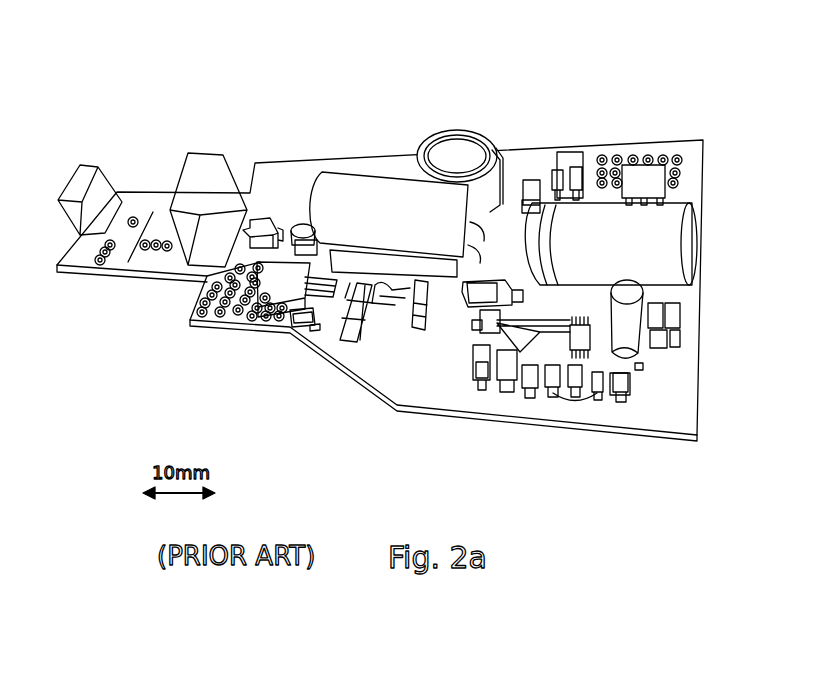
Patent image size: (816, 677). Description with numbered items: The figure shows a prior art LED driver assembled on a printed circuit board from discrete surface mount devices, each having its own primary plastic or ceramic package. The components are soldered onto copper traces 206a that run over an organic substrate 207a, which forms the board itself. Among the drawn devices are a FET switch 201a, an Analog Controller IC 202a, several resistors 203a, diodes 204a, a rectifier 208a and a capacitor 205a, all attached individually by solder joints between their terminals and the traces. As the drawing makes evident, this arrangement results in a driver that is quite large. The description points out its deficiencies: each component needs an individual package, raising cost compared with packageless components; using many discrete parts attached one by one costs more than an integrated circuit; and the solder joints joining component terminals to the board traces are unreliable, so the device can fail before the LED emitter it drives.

The FET switch 201a is at (282, 285).
The Analog Controller IC 202a is at (615, 398).
The resistors 203a is at (518, 387).
The diodes 204a is at (417, 300).
The capacitor 205a is at (585, 220).
The copper traces 206a is at (482, 380).
The organic substrate 207a is at (275, 162).
The rectifier 208a is at (265, 218).